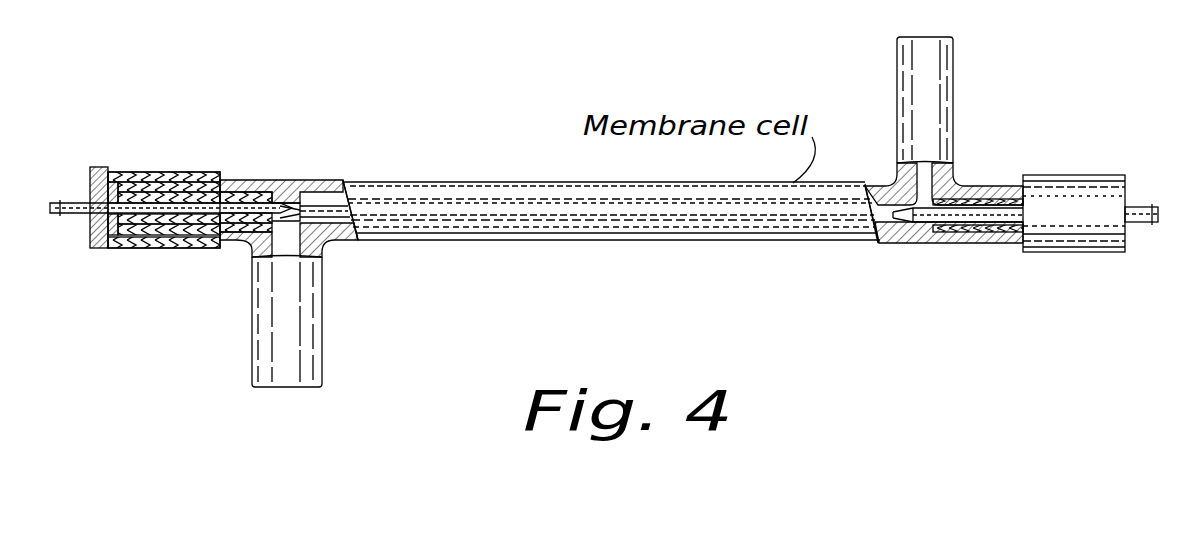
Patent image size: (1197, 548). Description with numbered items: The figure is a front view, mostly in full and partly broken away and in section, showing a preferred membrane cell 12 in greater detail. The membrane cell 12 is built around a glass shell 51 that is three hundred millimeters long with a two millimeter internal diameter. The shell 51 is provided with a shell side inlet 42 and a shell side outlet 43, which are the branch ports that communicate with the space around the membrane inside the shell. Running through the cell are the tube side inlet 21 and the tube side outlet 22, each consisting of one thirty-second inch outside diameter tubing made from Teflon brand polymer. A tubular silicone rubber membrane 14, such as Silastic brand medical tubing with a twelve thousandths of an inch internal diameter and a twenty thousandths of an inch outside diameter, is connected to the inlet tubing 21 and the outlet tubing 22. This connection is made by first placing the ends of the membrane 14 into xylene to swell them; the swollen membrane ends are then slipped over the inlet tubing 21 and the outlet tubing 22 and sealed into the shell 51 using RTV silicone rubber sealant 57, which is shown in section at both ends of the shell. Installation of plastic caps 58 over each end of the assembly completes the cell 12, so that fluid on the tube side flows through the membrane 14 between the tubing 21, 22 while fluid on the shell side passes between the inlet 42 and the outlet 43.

The membrane cell 12 is at (614, 183).
The tubular silicone rubber membrane 14 is at (322, 205).
The tube side inlet 21 is at (1140, 212).
The tube side outlet 22 is at (70, 205).
The shell side inlet 42 is at (943, 97).
The shell side outlet 43 is at (313, 340).
The glass shell 51 is at (683, 235).
The silicone rubber sealant 57 is at (255, 195).
The plastic caps 58 is at (128, 240).